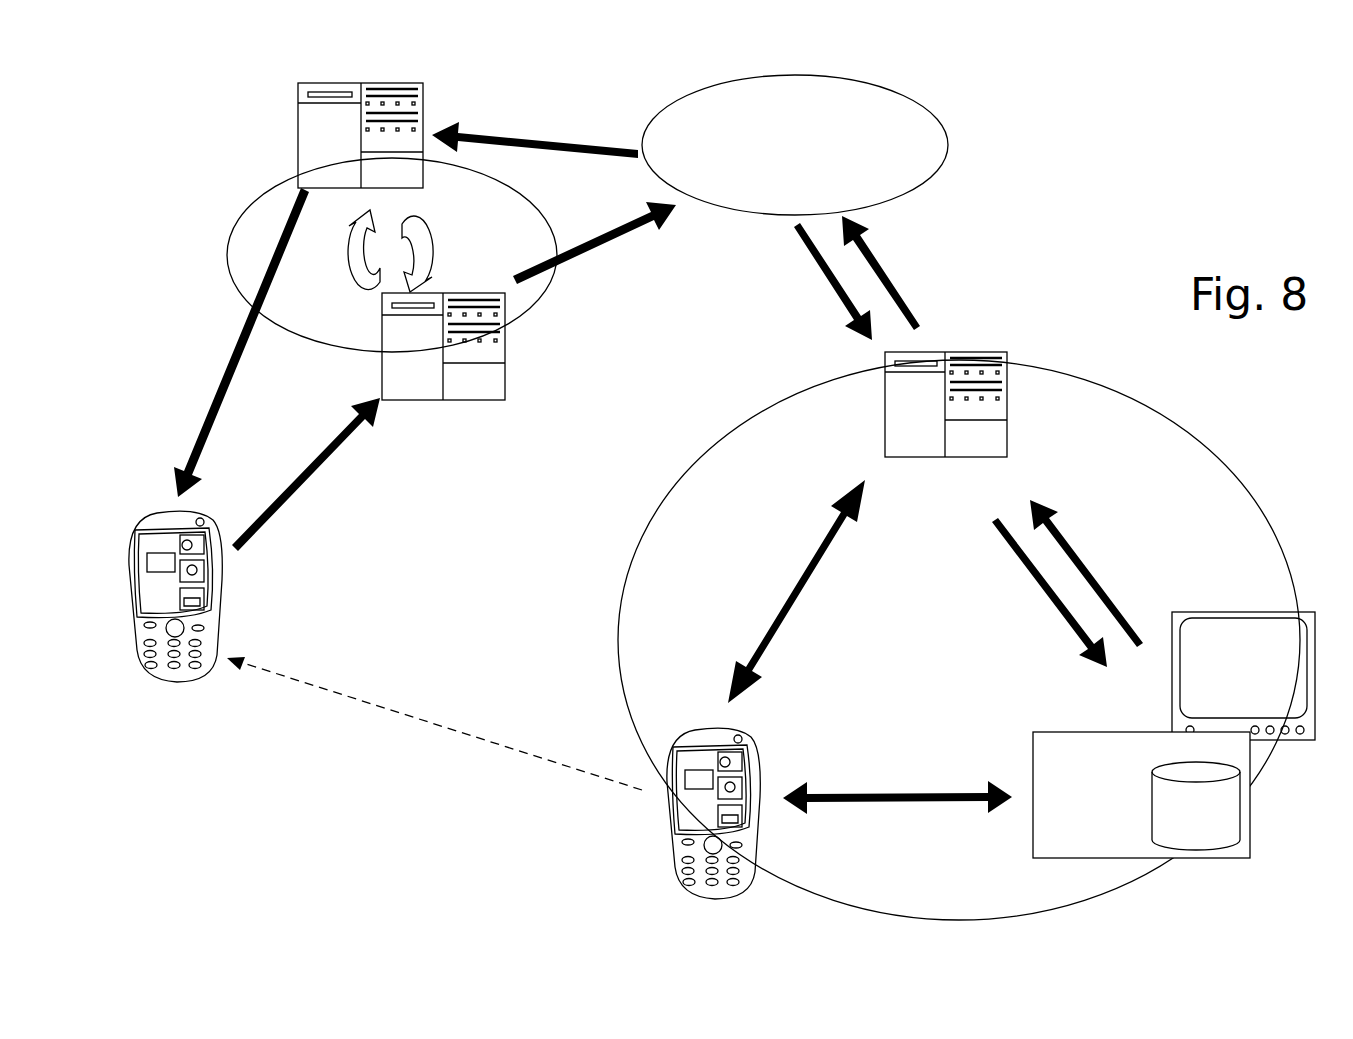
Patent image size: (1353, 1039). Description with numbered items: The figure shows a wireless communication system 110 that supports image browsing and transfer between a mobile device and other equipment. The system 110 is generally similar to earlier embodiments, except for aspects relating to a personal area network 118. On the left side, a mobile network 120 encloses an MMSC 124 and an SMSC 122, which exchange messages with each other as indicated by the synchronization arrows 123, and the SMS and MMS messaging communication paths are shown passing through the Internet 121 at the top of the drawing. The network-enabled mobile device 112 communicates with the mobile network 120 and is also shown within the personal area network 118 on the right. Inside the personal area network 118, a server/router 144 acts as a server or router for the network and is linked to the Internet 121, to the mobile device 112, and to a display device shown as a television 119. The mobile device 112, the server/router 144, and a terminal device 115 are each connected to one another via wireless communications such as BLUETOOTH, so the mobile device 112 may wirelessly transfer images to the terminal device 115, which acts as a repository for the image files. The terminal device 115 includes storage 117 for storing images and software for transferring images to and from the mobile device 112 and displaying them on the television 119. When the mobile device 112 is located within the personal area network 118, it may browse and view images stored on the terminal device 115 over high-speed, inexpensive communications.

The wireless communication system 110 is at (1033, 195).
The mobile device 112 is at (207, 628).
The terminal device 115 is at (1223, 750).
The storage 117 is at (1213, 837).
The personal area network 118 is at (1158, 460).
The television 119 is at (1270, 628).
The mobile network 120 is at (265, 205).
The Internet 121 is at (897, 123).
The SMSC 122 is at (500, 383).
The synchronization between MMSC and SMSC 123 is at (352, 277).
The MMSC 124 is at (410, 118).
The server/router 144 is at (990, 388).